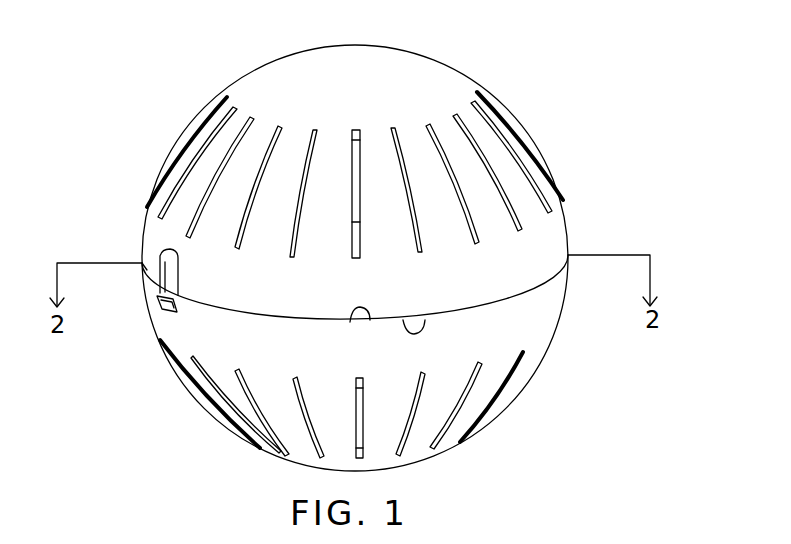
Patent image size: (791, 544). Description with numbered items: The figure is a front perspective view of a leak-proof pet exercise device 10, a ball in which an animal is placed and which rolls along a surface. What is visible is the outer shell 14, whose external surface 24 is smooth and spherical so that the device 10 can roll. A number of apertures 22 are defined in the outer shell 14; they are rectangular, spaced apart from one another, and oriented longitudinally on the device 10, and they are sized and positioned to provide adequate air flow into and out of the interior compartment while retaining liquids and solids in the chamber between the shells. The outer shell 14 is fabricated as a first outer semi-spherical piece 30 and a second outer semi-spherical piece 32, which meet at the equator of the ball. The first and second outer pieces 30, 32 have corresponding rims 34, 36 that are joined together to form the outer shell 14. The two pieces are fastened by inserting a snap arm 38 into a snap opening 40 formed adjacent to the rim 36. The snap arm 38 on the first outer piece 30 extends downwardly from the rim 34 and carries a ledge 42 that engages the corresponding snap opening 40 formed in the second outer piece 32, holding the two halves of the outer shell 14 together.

The leak-proof pet exercise device 10 is at (150, 96).
The outer shell 14 is at (443, 55).
The apertures 22 is at (358, 222).
The external surface 24 is at (303, 68).
The first outer semi-spherical piece 30 is at (562, 222).
The second outer semi-spherical piece 32 is at (550, 310).
The rim 34 is at (422, 322).
The rim 36 is at (350, 322).
The snap arm 38 is at (165, 270).
The snap opening 40 is at (168, 311).
The ledge 42 is at (143, 265).